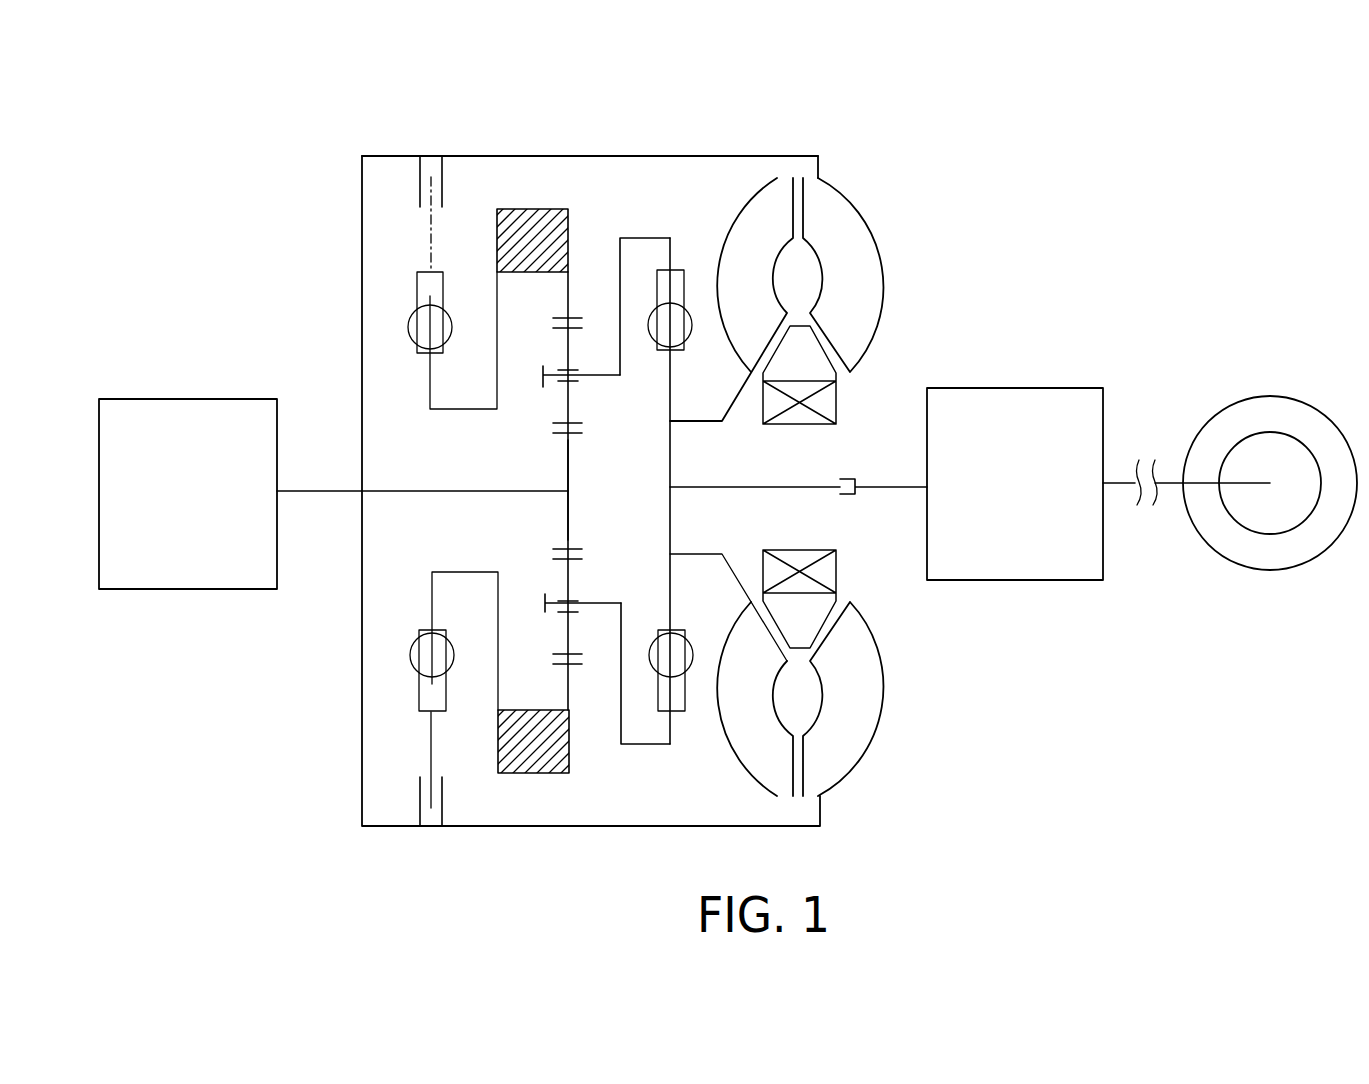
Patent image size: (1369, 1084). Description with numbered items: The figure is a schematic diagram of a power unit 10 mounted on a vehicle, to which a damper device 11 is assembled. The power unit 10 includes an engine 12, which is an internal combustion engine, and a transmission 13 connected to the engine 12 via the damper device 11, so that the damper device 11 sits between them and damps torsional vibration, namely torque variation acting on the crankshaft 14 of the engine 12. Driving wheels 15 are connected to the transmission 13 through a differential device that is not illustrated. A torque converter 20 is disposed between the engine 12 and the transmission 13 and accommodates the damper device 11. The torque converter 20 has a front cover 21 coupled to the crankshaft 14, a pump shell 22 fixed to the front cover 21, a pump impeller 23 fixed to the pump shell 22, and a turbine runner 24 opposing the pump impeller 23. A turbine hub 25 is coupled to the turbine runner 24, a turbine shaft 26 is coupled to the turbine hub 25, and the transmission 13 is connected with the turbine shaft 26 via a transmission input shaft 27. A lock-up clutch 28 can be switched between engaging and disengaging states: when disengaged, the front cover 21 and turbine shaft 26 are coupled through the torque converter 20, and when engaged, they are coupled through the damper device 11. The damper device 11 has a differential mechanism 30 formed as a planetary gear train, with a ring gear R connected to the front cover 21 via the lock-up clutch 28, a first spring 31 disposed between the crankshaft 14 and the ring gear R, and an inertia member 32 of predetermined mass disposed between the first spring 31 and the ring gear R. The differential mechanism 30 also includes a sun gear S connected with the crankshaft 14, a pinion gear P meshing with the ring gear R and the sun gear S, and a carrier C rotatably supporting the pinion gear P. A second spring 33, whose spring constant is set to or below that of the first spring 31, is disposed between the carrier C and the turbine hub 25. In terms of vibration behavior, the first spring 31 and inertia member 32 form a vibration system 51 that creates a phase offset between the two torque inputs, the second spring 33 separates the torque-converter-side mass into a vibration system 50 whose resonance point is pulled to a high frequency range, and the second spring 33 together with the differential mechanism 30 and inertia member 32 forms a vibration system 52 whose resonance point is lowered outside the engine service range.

The power unit 10 is at (1117, 179).
The damper device 11 is at (392, 295).
The engine 12 is at (146, 399).
The transmission 13 is at (1055, 388).
The crankshaft 14 is at (308, 487).
The driving wheels 15 is at (1278, 397).
The torque converter 20 is at (809, 447).
The front cover 21 is at (355, 219).
The pump shell 22 is at (648, 156).
The pump impeller 23 is at (855, 162).
The turbine runner 24 is at (750, 215).
The turbine hub 25 is at (672, 456).
The turbine shaft 26 is at (753, 490).
The transmission input shaft 27 is at (892, 482).
The lock-up clutch 28 is at (413, 792).
The differential mechanism 30 is at (587, 685).
The first spring 31 is at (412, 342).
The inertia member 32 is at (497, 243).
The second spring 33 is at (685, 342).
The vibration system 50 is at (660, 452).
The vibration system 51 is at (472, 718).
The vibration system 52 is at (655, 752).
The ring gear R is at (574, 316).
The carrier C is at (592, 372).
The pinion gear P is at (571, 407).
The sun gear S is at (568, 452).